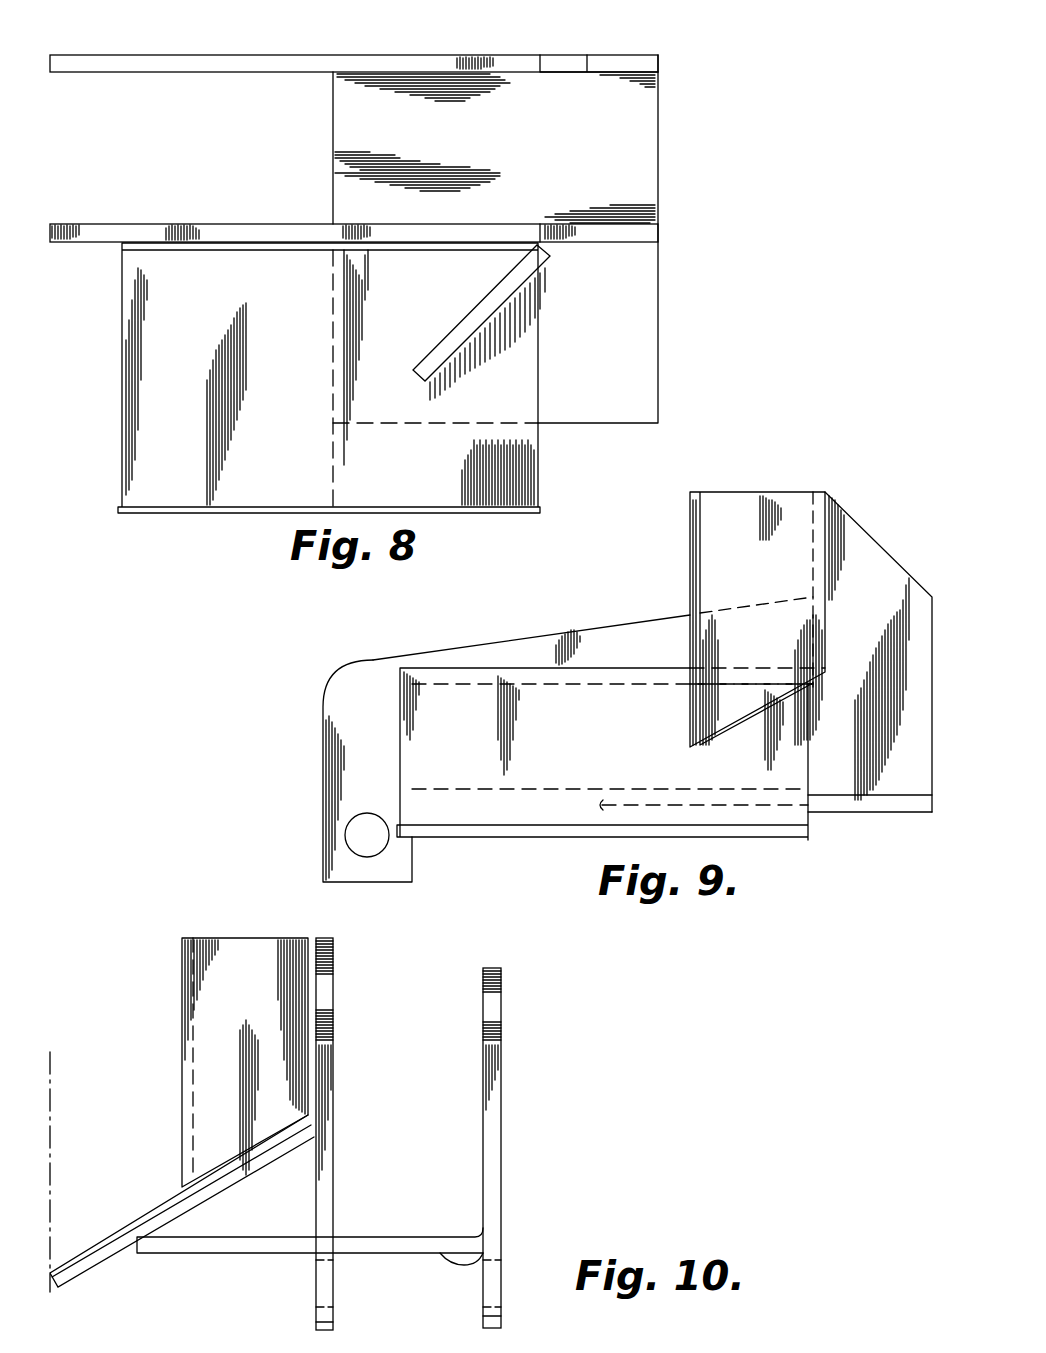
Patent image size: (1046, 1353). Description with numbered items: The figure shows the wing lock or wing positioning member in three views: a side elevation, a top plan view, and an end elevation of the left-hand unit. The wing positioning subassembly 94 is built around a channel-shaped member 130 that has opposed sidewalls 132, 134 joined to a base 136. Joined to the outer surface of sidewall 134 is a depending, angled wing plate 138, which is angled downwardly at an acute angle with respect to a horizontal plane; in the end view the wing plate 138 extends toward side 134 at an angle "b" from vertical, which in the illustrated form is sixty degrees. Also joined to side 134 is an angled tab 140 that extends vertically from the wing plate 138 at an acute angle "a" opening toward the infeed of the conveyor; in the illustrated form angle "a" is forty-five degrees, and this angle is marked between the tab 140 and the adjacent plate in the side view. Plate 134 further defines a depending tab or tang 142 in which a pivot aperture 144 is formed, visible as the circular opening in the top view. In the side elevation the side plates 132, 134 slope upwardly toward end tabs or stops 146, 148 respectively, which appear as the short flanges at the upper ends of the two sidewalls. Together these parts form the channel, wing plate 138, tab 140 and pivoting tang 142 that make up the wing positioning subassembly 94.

In FIG. 8, the wing positioning subassembly 94 is at (686, 68).
In FIG. 9, the wing positioning subassembly 94 is at (786, 462).
In FIG. 10, the wing positioning subassembly 94 is at (522, 1014).
In FIG. 8, the channel-shaped member 130 is at (312, 4).
In FIG. 8, the sidewall 132 is at (438, 18).
In FIG. 10, the sidewall 132 is at (492, 1095).
In FIG. 8, the sidewall 134 is at (217, 224).
In FIG. 9, the sidewall 134 is at (574, 640).
In FIG. 10, the sidewall 134 is at (334, 1142).
In FIG. 8, the base 136 is at (464, 154).
In FIG. 9, the base 136 is at (832, 808).
In FIG. 10, the base 136 is at (466, 1250).
In FIG. 8, the wing plate 138 is at (135, 336).
In FIG. 9, the wing plate 138 is at (418, 716).
In FIG. 10, the wing plate 138 is at (140, 1214).
In FIG. 8, the angled tab 140 is at (505, 300).
In FIG. 9, the angled tab 140 is at (748, 458).
In FIG. 10, the angled tab 140 is at (220, 946).
In FIG. 9, the depending tab or tang 142 is at (342, 752).
In FIG. 10, the depending tab or tang 142 is at (334, 1323).
In FIG. 9, the pivot aperture 144 is at (358, 834).
In FIG. 8, the end tab or stop 146 is at (640, 18).
In FIG. 10, the end tab or stop 146 is at (502, 970).
In FIG. 8, the end tab or stop 148 is at (614, 232).
In FIG. 9, the end tab or stop 148 is at (862, 530).
In FIG. 10, the end tab or stop 148 is at (336, 974).